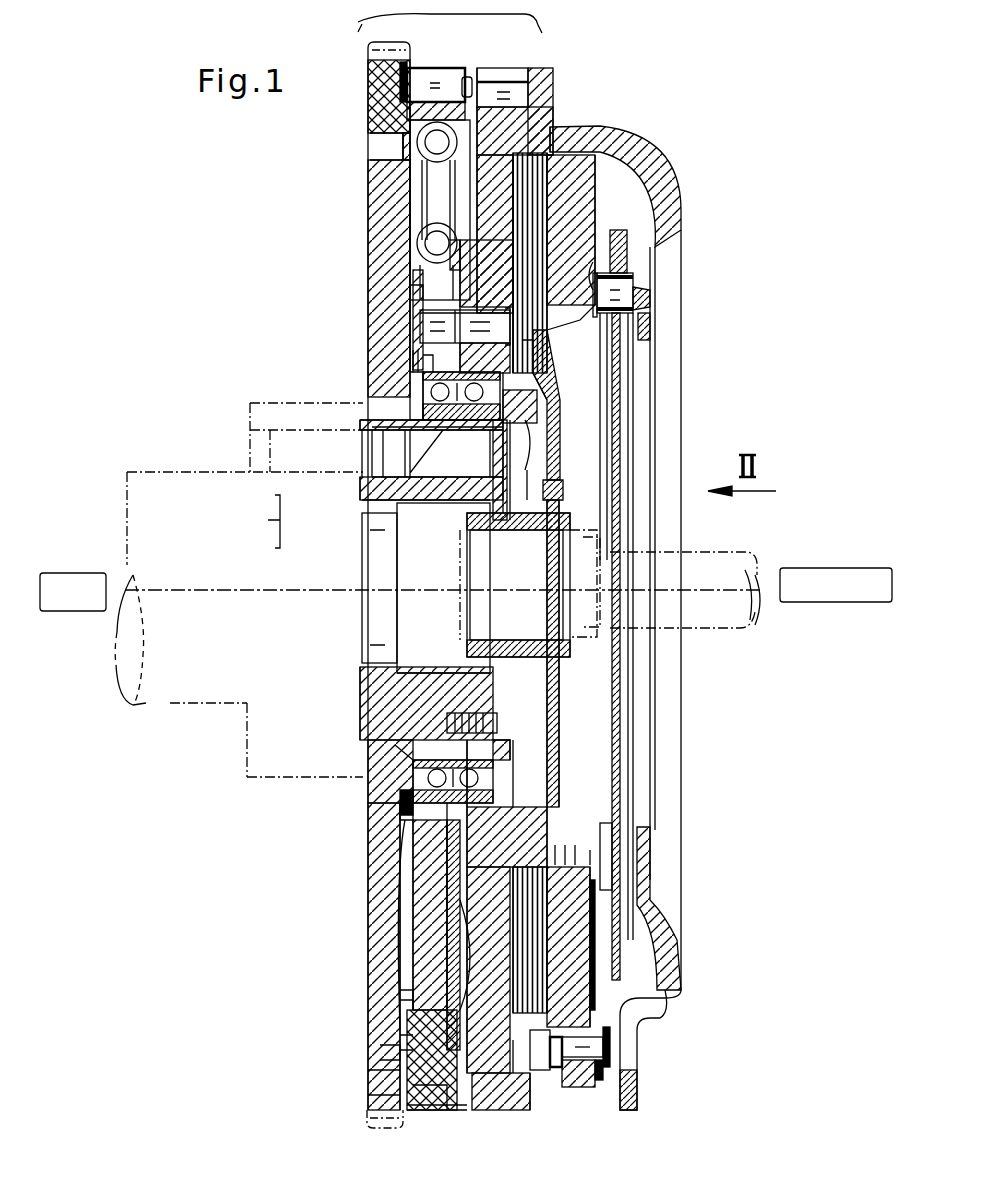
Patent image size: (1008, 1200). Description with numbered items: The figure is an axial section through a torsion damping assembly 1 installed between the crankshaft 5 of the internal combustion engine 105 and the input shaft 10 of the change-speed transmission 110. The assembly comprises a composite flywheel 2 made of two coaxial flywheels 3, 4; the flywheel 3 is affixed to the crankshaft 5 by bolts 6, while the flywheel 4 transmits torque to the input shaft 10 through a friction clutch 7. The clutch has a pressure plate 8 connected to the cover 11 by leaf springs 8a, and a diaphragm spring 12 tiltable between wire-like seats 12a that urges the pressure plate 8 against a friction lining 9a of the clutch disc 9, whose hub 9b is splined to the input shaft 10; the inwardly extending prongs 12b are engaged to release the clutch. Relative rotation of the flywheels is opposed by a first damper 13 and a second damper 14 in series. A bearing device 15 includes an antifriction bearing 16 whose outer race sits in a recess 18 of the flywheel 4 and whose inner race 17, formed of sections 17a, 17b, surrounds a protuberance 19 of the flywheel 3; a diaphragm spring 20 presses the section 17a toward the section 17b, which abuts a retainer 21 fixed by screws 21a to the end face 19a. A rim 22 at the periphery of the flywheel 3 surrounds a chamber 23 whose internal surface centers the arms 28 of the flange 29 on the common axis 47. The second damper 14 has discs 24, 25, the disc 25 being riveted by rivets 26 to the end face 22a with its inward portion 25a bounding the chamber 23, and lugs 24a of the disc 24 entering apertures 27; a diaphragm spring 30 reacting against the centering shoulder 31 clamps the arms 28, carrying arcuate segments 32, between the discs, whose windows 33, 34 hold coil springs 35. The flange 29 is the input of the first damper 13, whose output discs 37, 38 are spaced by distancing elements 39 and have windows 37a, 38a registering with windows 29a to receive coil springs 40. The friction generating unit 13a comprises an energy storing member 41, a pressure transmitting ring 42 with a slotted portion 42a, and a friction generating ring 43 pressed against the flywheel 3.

The torsion damping assembly 1 is at (550, 37).
The composite flywheel 2 is at (438, 28).
The flywheel 3 is at (378, 175).
The flywheel 4 is at (553, 72).
The crankshaft 5 is at (165, 696).
The bolts 6 is at (547, 441).
The friction clutch 7 is at (622, 148).
The pressure plate 8 is at (577, 870).
The leaf springs 8a is at (602, 1080).
The clutch disc 9 is at (556, 728).
The friction lining 9a is at (580, 182).
The hub 9b is at (558, 502).
The input shaft 10 is at (730, 622).
The cover 11 is at (645, 915).
The diaphragm spring 12 is at (618, 795).
The seats 12a is at (640, 285).
The prongs 12b is at (617, 430).
The first damper 13 is at (398, 246).
The friction generating unit 13a is at (418, 389).
The second damper 14 is at (410, 1090).
The bearing device 15 is at (398, 748).
The antifriction bearing 16 is at (413, 778).
The inner race 17 is at (260, 524).
The inner race section 17a is at (363, 488).
The inner race section 17b is at (363, 520).
The recess 18 is at (400, 803).
The protuberance 19 is at (445, 653).
The end face 19a is at (445, 545).
The diaphragm spring 20 is at (440, 421).
The retainer 21 is at (552, 412).
The screws 21a is at (500, 706).
The rim 22 is at (445, 82).
The end face 22a is at (478, 85).
The chamber 23 is at (410, 75).
The disc 24 is at (430, 1030).
The lugs 24a is at (370, 1121).
The disc 25 is at (500, 1105).
The radially inwardly extending portion 25a is at (542, 1092).
The rivets 26 is at (395, 82).
The apertures 27 is at (435, 1110).
The arms 28 is at (440, 1096).
The flange 29 is at (432, 906).
The windows 29a is at (432, 268).
The diaphragm spring 30 is at (420, 1010).
The centering shoulder 31 is at (410, 1043).
The arcuate segments 32 is at (405, 1003).
The windows 33 is at (410, 130).
The windows 34 is at (520, 125).
The coil springs 35 is at (565, 140).
The disc 37 is at (447, 872).
The windows 37a is at (423, 200).
The disc 38 is at (450, 840).
The windows 38a is at (548, 215).
The distancing elements 39 is at (430, 320).
The coil springs 40 is at (440, 233).
The energy storing member 41 is at (425, 375).
The pressure transmitting ring 42 is at (428, 381).
The slotted radially outermost portion 42a is at (420, 291).
The friction generating ring 43 is at (400, 406).
The common axis 47 is at (300, 597).
The internal combustion engine 105 is at (70, 612).
The change-speed transmission 110 is at (848, 604).